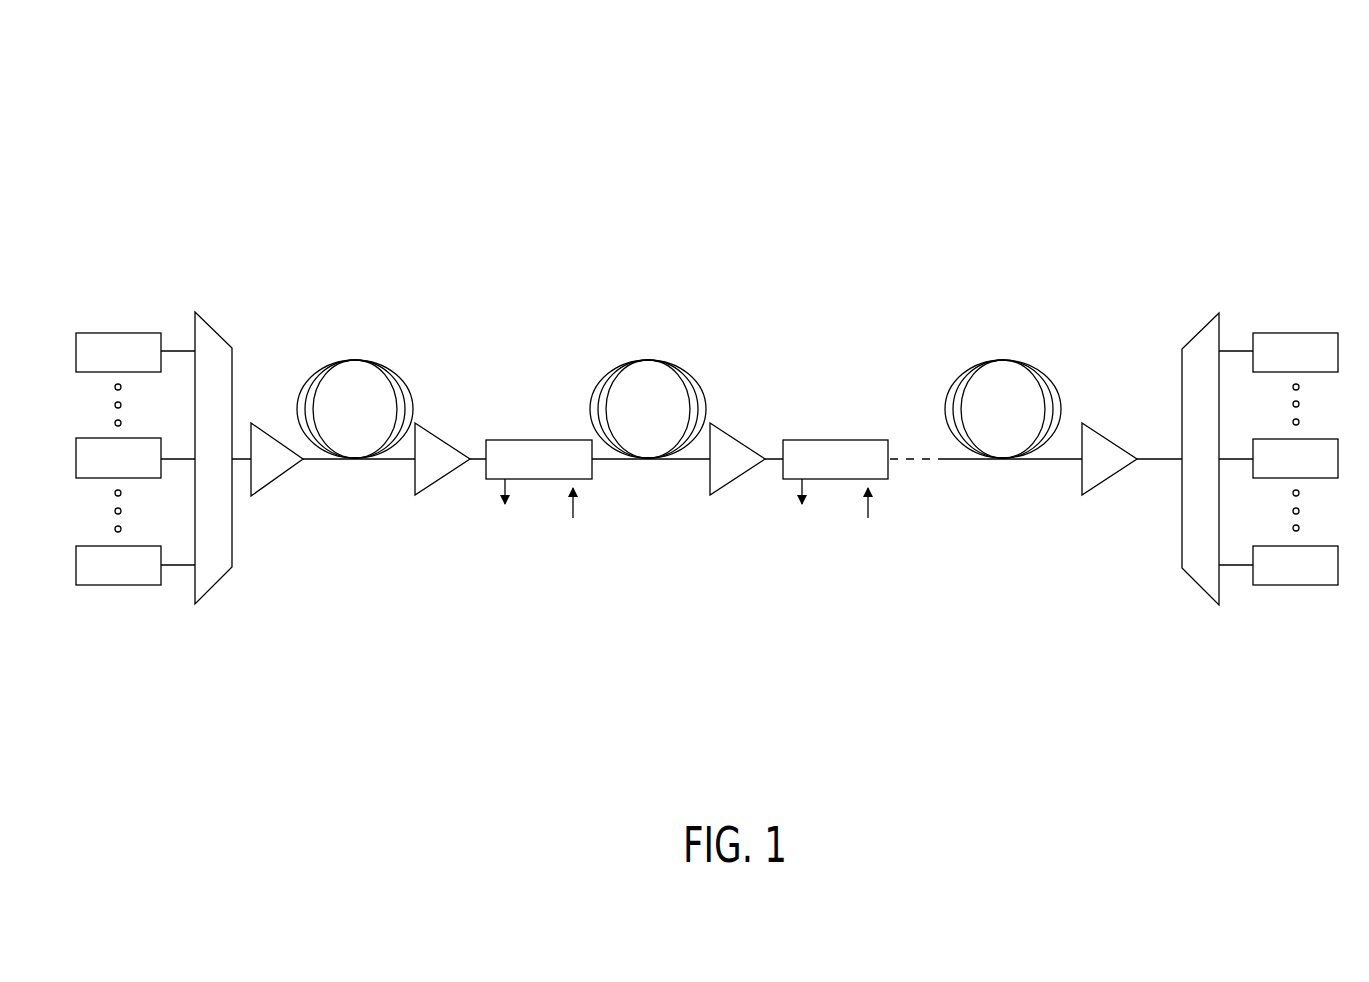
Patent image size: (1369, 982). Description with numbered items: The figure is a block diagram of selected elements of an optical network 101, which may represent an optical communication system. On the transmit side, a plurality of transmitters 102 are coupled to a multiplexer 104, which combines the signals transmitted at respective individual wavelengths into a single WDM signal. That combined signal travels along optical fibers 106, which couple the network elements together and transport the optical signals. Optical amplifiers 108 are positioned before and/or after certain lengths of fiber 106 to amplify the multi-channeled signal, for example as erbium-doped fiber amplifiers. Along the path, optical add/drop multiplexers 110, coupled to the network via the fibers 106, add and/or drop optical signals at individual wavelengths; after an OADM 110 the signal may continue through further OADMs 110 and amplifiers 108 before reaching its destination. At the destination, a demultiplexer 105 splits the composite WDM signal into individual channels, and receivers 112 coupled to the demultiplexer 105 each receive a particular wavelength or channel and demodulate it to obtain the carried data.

The optical network 101 is at (167, 77).
The transmitter 102 is at (112, 333).
The multiplexer 104 is at (214, 325).
The demultiplexer 105 is at (1204, 326).
The optical fiber 106 is at (352, 360).
The optical amplifier 108 is at (271, 482).
The optical add/drop multiplexer 110 is at (524, 440).
The receiver 112 is at (1314, 333).